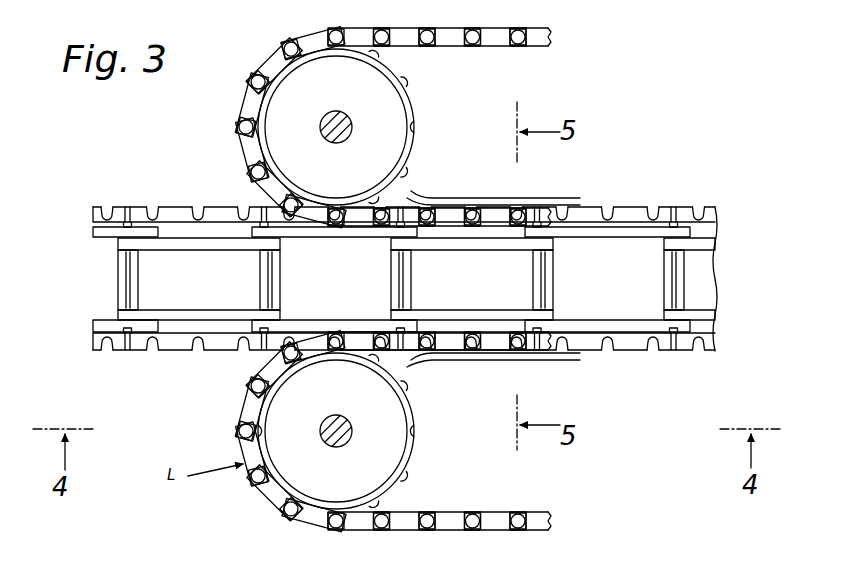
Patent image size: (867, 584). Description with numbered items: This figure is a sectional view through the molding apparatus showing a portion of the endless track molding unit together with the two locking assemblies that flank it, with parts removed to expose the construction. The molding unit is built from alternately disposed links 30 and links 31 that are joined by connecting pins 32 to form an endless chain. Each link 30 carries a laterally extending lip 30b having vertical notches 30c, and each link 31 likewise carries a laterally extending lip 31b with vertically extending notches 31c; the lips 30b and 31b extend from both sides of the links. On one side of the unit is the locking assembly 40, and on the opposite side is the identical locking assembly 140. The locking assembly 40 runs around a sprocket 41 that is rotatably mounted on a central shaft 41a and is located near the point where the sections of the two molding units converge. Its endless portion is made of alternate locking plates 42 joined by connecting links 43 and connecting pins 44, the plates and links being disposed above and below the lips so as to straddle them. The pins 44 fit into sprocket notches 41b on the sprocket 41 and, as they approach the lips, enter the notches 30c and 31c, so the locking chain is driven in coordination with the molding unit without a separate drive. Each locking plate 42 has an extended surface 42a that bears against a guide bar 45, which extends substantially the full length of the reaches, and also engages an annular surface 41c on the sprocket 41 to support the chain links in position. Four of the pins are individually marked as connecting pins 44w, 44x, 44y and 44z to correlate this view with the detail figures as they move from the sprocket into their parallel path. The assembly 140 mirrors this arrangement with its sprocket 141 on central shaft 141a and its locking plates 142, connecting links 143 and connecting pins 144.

The link 30 is at (435, 279).
The laterally extending lip 30b is at (175, 206).
The vertical notch 30c is at (150, 206).
The link 31 is at (97, 320).
The laterally extending lip 31b is at (93, 230).
The vertically extending notch 31c is at (107, 206).
The connecting pin 32 is at (138, 274).
The locking assembly 40 is at (367, 422).
The sprocket 41 is at (304, 460).
The central shaft 41a is at (353, 432).
The sprocket notch 41b is at (422, 470).
The annular surface 41c is at (245, 450).
The locking plate 42 is at (250, 402).
The extended surface 42a is at (404, 358).
The connecting link 43 is at (282, 357).
The connecting pin 44 is at (255, 386).
The connecting pin 44w is at (297, 361).
The connecting pin 44x is at (336, 333).
The connecting pin 44y is at (384, 333).
The connecting pin 44z is at (432, 333).
The guide bar 45 is at (527, 361).
The locking assembly 140 is at (363, 114).
The sprocket 141 is at (345, 172).
The central shaft 141a is at (338, 111).
The locking plate 142 is at (452, 46).
The connecting link 143 is at (497, 46).
The connecting pin 144 is at (482, 30).